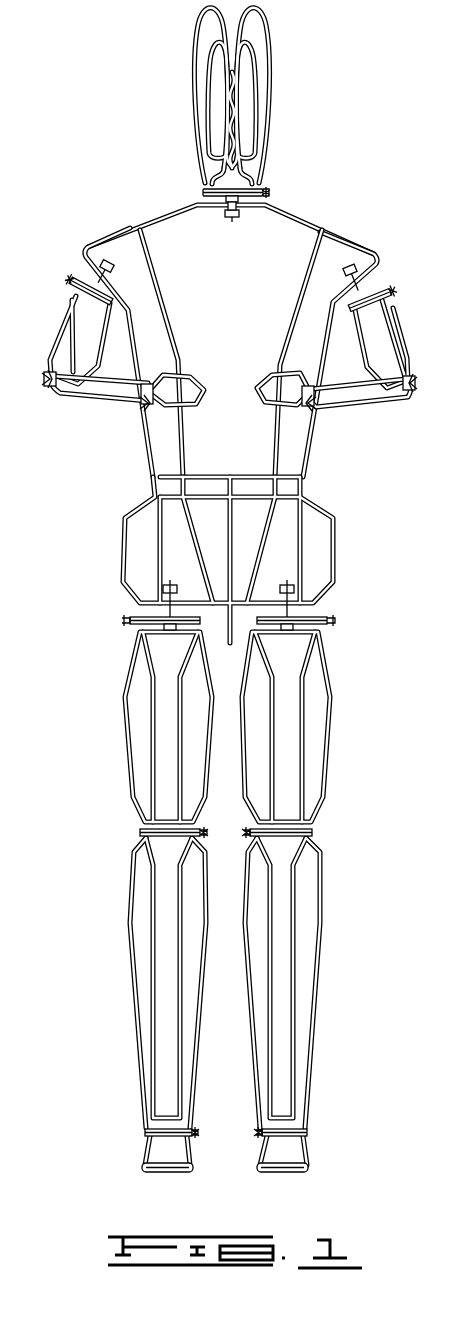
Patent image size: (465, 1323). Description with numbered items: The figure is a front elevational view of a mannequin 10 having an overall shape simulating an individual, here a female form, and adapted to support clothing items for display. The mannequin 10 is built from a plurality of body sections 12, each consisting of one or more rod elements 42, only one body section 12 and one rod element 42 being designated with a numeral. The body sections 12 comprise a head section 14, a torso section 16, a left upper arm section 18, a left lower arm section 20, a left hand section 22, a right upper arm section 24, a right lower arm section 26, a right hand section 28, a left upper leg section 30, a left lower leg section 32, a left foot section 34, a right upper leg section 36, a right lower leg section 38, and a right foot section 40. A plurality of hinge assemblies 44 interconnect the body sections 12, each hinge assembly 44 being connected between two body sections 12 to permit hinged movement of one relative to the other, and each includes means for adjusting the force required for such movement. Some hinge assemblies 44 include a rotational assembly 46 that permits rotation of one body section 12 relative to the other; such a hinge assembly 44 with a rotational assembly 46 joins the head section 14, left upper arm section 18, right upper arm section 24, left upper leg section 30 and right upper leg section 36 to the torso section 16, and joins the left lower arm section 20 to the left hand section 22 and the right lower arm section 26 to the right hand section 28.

The mannequin 10 is at (288, 38).
The body section 12 is at (300, 215).
The head section 14 is at (276, 107).
The torso section 16 is at (354, 238).
The left upper arm section 18 is at (408, 324).
The left lower arm section 20 is at (366, 412).
The left hand section 22 is at (258, 375).
The right upper arm section 24 is at (62, 314).
The right lower arm section 26 is at (97, 406).
The right hand section 28 is at (202, 404).
The left upper leg section 30 is at (333, 697).
The left lower leg section 32 is at (322, 918).
The left foot section 34 is at (309, 1155).
The right upper leg section 36 is at (123, 692).
The right lower leg section 38 is at (130, 922).
The right foot section 40 is at (147, 1150).
The rod element 42 is at (170, 305).
The hinge assembly 44 is at (203, 192).
The rotational assembly 46 is at (229, 218).